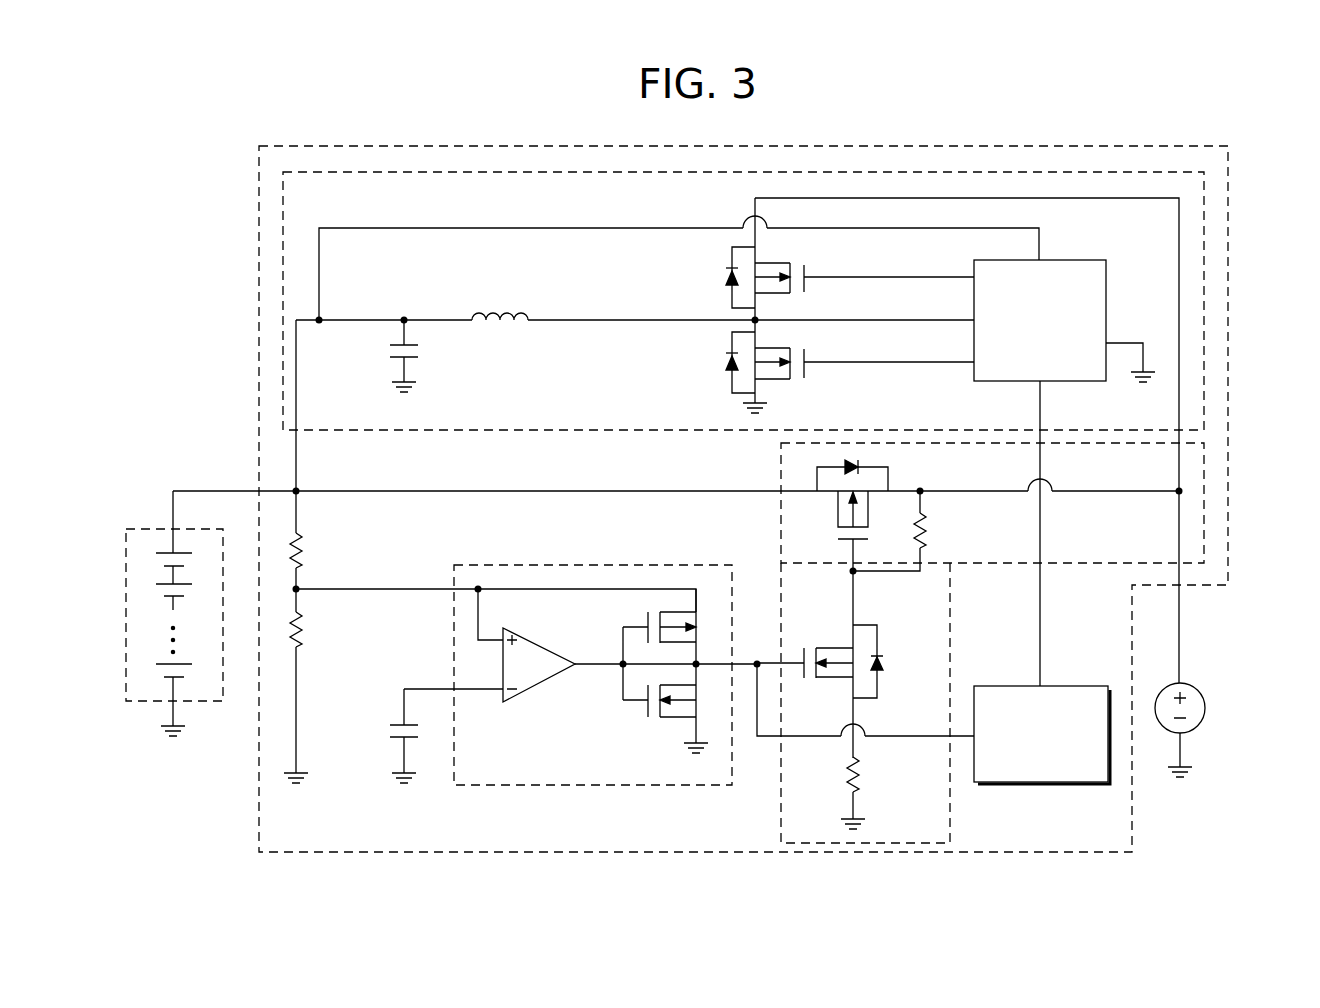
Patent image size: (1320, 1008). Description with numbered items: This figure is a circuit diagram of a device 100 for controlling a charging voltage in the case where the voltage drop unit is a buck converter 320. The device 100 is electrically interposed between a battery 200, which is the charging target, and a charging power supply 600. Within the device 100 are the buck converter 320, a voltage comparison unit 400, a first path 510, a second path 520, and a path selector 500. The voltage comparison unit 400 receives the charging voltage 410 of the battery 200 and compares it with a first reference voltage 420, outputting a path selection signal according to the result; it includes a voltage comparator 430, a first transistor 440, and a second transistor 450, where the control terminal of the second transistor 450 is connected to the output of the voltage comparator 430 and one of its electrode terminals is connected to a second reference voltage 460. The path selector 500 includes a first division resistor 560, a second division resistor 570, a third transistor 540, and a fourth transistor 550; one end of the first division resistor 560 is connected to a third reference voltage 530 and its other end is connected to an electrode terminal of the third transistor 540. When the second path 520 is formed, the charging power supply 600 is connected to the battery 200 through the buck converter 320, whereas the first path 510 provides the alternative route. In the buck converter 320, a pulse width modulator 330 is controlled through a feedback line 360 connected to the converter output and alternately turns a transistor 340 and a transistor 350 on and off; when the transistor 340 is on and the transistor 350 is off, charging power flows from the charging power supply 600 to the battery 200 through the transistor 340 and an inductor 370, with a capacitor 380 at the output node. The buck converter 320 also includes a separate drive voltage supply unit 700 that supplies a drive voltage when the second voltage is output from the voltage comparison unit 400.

The device for controlling a charging voltage 100 is at (876, 146).
The battery 200 is at (151, 529).
The buck converter 320 is at (1204, 301).
The pulse width modulator 330 is at (1093, 260).
The transistor 340 is at (782, 265).
The transistor 350 is at (782, 380).
The feedback line 360 is at (450, 228).
The inductor 370 is at (525, 318).
The capacitor 380 is at (420, 350).
The voltage comparison unit 400 is at (550, 565).
The charging voltage 410 is at (398, 589).
The first reference voltage 420 is at (392, 733).
The voltage comparator 430 is at (565, 630).
The first transistor 440 is at (674, 612).
The second transistor 450 is at (670, 718).
The second reference voltage 460 is at (692, 755).
The path selector 500 is at (1204, 513).
The first path 510 is at (622, 490).
The second path 520 is at (1179, 387).
The third reference voltage 530 is at (860, 818).
The third transistor 540 is at (828, 648).
The fourth transistor 550 is at (838, 510).
The first division resistor 560 is at (860, 762).
The second division resistor 570 is at (927, 526).
The charging power supply 600 is at (1196, 690).
The drive voltage supply unit 700 is at (1085, 686).